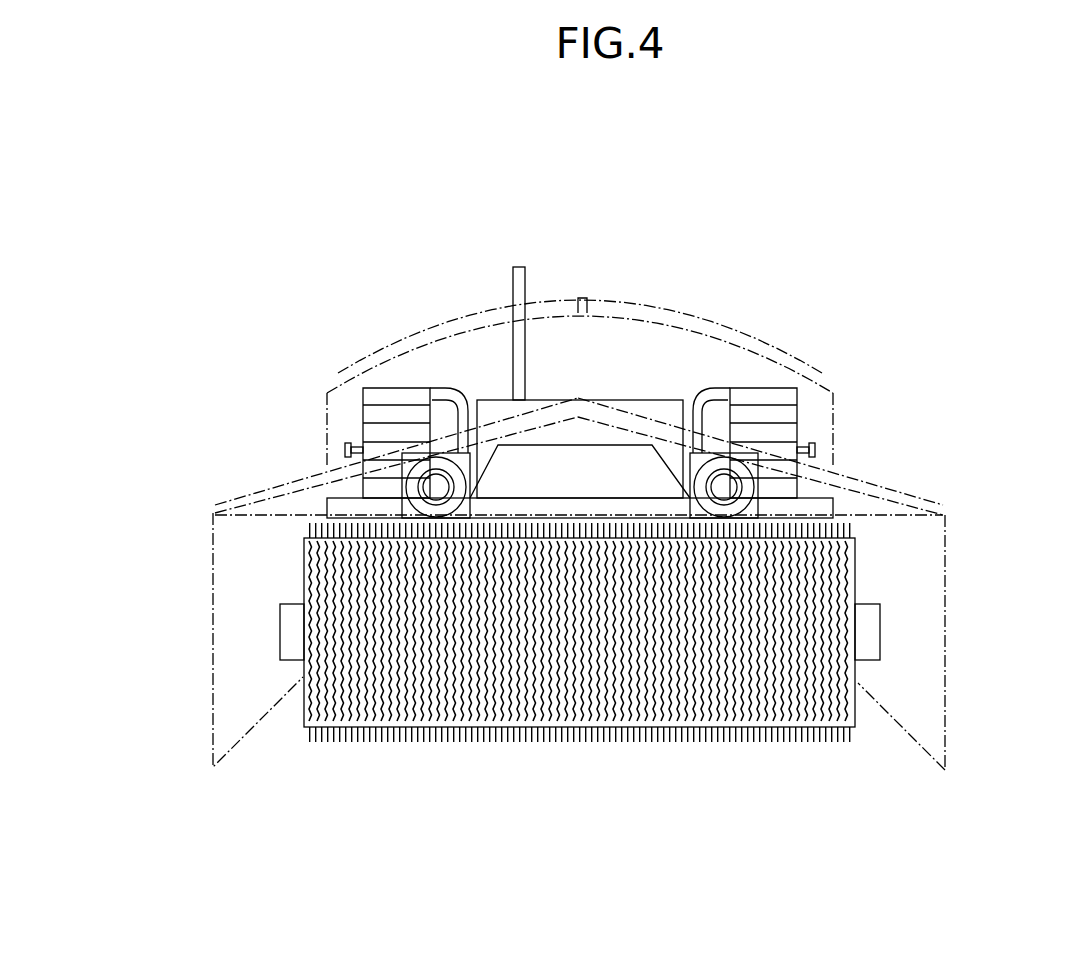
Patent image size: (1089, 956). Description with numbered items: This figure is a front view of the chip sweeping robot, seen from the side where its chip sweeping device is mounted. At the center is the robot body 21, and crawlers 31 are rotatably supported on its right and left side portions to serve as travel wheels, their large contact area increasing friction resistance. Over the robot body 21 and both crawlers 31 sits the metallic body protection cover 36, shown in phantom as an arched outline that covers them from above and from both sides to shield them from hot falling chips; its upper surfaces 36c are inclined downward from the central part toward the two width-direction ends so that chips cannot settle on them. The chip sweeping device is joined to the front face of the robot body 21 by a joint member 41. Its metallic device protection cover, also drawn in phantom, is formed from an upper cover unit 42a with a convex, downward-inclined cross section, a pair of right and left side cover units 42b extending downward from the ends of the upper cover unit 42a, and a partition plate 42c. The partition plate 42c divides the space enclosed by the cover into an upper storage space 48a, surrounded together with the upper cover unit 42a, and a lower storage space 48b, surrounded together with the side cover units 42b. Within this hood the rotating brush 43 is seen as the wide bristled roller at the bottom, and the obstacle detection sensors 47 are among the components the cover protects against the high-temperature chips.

The robot body 21 is at (617, 400).
The crawlers 31 is at (412, 388).
The body protection cover 36 is at (480, 302).
The upper surfaces 36c is at (585, 300).
The joint member 41 is at (635, 455).
The upper cover unit 42a is at (596, 412).
The side cover units 42b is at (213, 670).
The partition plate 42c is at (890, 522).
The rotating brush 43 is at (302, 713).
The obstacle detection sensors 47 is at (413, 497).
The upper storage space 48a is at (877, 490).
The lower storage space 48b is at (903, 705).